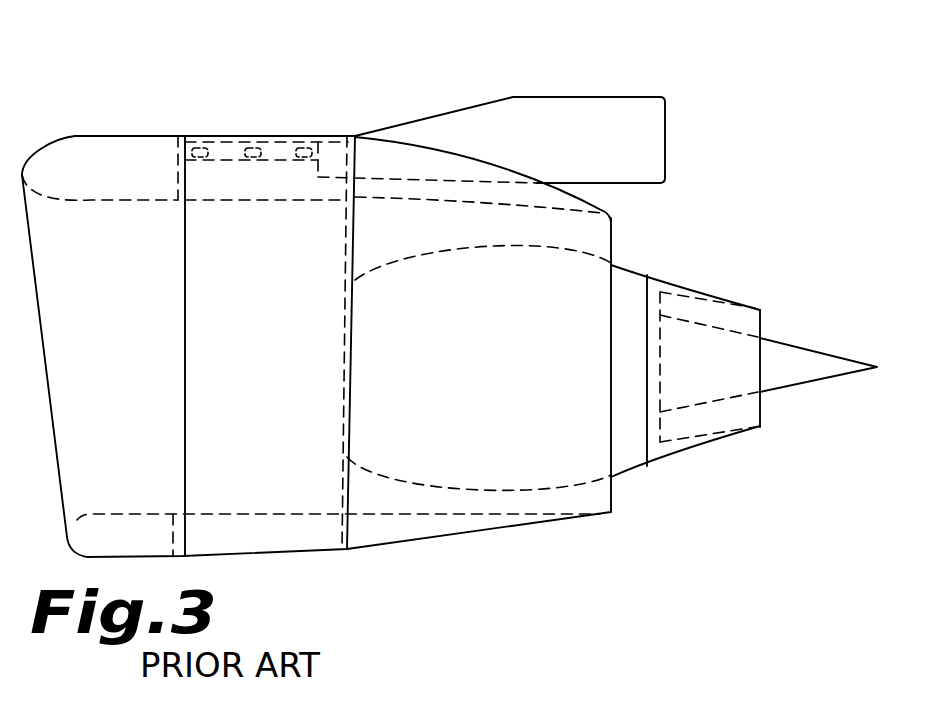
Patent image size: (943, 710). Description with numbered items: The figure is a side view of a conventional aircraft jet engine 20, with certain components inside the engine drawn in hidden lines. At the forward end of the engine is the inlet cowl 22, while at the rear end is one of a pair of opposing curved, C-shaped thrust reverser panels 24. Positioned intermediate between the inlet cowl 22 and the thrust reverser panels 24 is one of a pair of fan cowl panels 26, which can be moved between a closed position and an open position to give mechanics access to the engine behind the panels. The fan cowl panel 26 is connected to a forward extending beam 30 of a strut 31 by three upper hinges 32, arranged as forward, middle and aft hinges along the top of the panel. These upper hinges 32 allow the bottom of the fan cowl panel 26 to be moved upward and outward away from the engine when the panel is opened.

The aircraft jet engine 20 is at (133, 127).
The inlet cowl 22 is at (74, 136).
The thrust reverser panels 24 is at (267, 136).
The fan cowl panels 26 is at (283, 503).
The forward extending beam 30 is at (222, 148).
The strut 31 is at (435, 115).
The upper hinges 32 is at (305, 150).